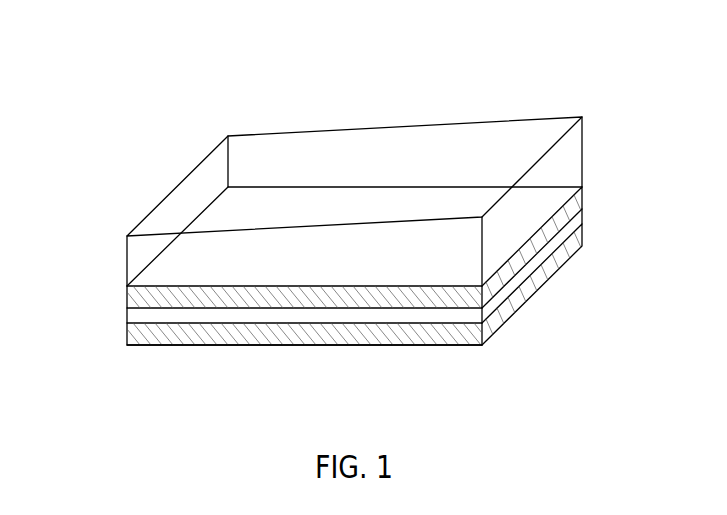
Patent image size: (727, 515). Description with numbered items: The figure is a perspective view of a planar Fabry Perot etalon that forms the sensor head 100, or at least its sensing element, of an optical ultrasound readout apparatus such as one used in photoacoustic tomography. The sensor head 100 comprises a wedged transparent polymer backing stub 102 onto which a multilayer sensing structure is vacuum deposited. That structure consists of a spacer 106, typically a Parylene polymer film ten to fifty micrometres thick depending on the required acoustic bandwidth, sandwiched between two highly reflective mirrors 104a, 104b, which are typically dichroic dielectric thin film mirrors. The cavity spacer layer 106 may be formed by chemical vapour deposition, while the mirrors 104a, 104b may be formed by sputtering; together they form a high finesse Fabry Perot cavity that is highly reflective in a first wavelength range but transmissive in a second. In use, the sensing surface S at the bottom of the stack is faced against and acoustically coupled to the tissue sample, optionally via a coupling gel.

The sensor head 100 is at (177, 95).
The wedged transparent polymer backing stub 102 is at (583, 150).
The highly reflective mirror 104a is at (583, 200).
The highly reflective mirror 104b is at (583, 237).
The spacer 106 is at (127, 316).
The sensing surface S is at (318, 347).